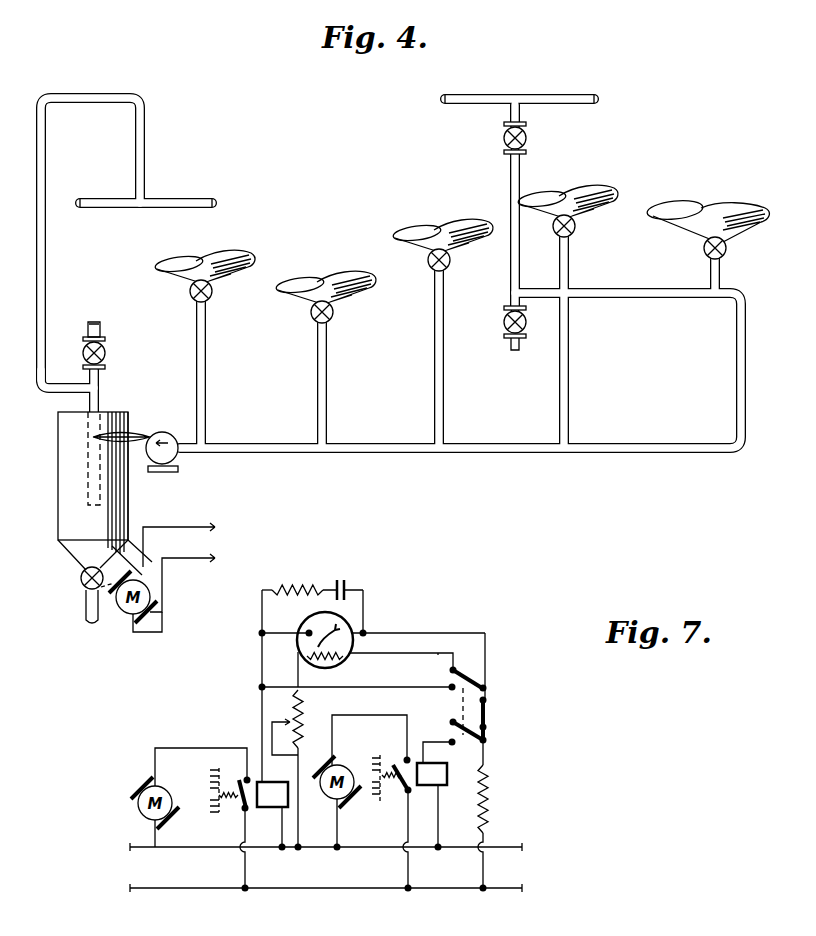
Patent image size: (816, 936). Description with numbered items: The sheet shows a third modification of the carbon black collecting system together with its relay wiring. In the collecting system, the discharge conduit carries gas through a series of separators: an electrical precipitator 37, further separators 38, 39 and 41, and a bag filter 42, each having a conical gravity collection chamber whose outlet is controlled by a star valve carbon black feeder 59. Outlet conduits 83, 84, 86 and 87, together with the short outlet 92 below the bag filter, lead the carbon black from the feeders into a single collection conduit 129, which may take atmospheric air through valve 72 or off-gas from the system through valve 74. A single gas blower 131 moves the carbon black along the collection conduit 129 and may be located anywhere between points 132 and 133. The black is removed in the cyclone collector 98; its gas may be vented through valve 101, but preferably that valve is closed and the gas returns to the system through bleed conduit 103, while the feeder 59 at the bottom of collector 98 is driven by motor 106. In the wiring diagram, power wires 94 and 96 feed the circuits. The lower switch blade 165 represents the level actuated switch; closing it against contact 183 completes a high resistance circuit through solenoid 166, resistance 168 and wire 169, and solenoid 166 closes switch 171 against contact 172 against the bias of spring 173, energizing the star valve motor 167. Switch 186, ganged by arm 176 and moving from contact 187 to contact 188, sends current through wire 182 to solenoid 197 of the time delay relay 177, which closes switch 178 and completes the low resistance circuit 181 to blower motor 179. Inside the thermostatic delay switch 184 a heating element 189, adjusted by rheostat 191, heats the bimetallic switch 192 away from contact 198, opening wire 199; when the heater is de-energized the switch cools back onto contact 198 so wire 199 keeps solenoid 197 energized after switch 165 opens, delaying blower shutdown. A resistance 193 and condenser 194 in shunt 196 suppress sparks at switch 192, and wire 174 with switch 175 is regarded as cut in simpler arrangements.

In FIG. 4, the bleed conduit 103 is at (93, 100).
In FIG. 4, the point 133 is at (172, 202).
In FIG. 4, the electrical precipitator 37 is at (170, 272).
In FIG. 4, the carbon black separator 38 is at (300, 270).
In FIG. 4, the carbon black separator 39 is at (418, 220).
In FIG. 4, the carbon black separator 41 is at (590, 186).
In FIG. 4, the bag filter 42 is at (697, 208).
In FIG. 4, the carbon black feeder 59 is at (213, 292).
In FIG. 4, the valve 74 is at (528, 139).
In FIG. 4, the valve 72 is at (504, 323).
In FIG. 4, the valve 101 is at (105, 353).
In FIG. 4, the outlet conduit 83 is at (207, 373).
In FIG. 4, the outlet conduit 84 is at (328, 375).
In FIG. 4, the outlet conduit 86 is at (445, 380).
In FIG. 4, the outlet conduit 87 is at (570, 381).
In FIG. 4, the conduit 92 is at (722, 266).
In FIG. 4, the collection conduit 129 is at (620, 297).
In FIG. 4, the point 132 is at (509, 294).
In FIG. 4, the carbon black collector 98 is at (58, 462).
In FIG. 4, the gas blower 131 is at (164, 472).
In FIG. 4, the motor 106 is at (150, 593).
In FIG. 7, the resistance 193 is at (296, 582).
In FIG. 7, the condenser 194 is at (346, 584).
In FIG. 7, the shunt 196 is at (365, 589).
In FIG. 7, the bimetallic thermostat switch 192 is at (342, 629).
In FIG. 7, the contact 198 is at (306, 628).
In FIG. 7, the thermostatic delay switch 184 is at (297, 645).
In FIG. 7, the heating element 189 is at (336, 660).
In FIG. 7, the contact 188 is at (448, 685).
In FIG. 7, the contact 187 is at (437, 652).
In FIG. 7, the wire 199 is at (487, 632).
In FIG. 7, the double-pole single-throw switch 186 is at (467, 677).
In FIG. 7, the gang-switch arm 176 is at (470, 680).
In FIG. 7, the wire 174 is at (489, 689).
In FIG. 7, the switch 175 is at (487, 718).
In FIG. 7, the contact 183 is at (488, 742).
In FIG. 7, the switch blade 165 is at (450, 724).
In FIG. 7, the resistance 168 is at (489, 772).
In FIG. 7, the rheostat 191 is at (303, 698).
In FIG. 7, the wire 182 is at (356, 688).
In FIG. 7, the time delay relay 177 is at (251, 711).
In FIG. 7, the low resistance circuit 181 is at (167, 748).
In FIG. 7, the blower motor 179 is at (140, 815).
In FIG. 7, the switch 178 is at (236, 808).
In FIG. 7, the solenoid 197 is at (279, 808).
In FIG. 7, the contact 172 is at (404, 756).
In FIG. 7, the motor 167 is at (325, 797).
In FIG. 7, the spring 173 is at (381, 798).
In FIG. 7, the switch 171 is at (400, 800).
In FIG. 7, the solenoid 166 is at (431, 788).
In FIG. 7, the power wire 94 is at (524, 846).
In FIG. 7, the wire 169 is at (492, 850).
In FIG. 7, the power wire 96 is at (502, 898).